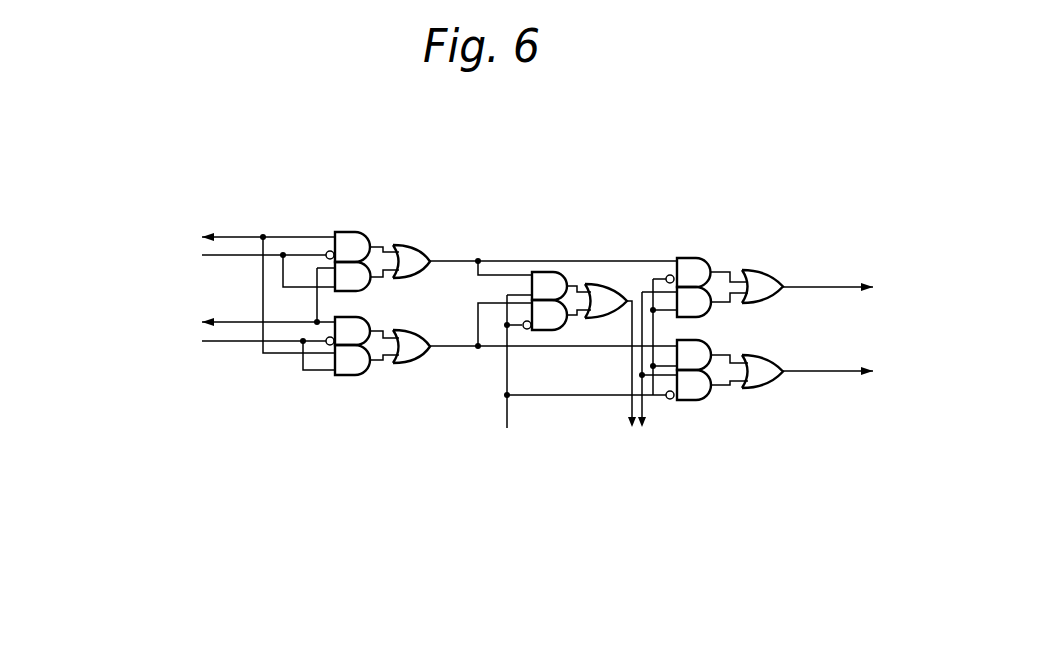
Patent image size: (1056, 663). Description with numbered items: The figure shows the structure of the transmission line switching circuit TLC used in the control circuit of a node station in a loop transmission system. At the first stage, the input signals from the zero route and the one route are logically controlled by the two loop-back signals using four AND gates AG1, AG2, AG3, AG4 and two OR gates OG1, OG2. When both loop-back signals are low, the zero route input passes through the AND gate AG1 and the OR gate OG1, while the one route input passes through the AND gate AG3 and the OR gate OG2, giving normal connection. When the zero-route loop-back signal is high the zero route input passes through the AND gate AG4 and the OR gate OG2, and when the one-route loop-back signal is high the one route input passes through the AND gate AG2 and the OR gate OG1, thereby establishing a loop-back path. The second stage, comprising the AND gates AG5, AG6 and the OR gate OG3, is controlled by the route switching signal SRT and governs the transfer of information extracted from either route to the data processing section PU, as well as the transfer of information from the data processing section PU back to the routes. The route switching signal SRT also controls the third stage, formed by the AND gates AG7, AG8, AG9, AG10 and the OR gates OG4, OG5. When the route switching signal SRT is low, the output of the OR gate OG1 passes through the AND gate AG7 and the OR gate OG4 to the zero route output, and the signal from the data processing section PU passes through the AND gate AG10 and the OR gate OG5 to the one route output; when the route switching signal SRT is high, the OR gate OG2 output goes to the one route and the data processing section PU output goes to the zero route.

The transmission line switching circuit TLC is at (547, 163).
The AND gate AG1 is at (338, 232).
The AND gate AG2 is at (368, 287).
The AND gate AG3 is at (372, 323).
The AND gate AG4 is at (338, 375).
The AND gate AG5 is at (539, 272).
The AND gate AG6 is at (545, 331).
The AND gate AG7 is at (687, 258).
The AND gate AG8 is at (707, 313).
The AND gate AG9 is at (705, 365).
The AND gate AG10 is at (687, 401).
The OR gate OG1 is at (406, 246).
The OR gate OG2 is at (400, 363).
The OR gate OG3 is at (602, 285).
The OR gate OG4 is at (748, 268).
The OR gate OG5 is at (770, 382).
The route switching signal SRT is at (509, 383).
The data processing section PU is at (637, 381).